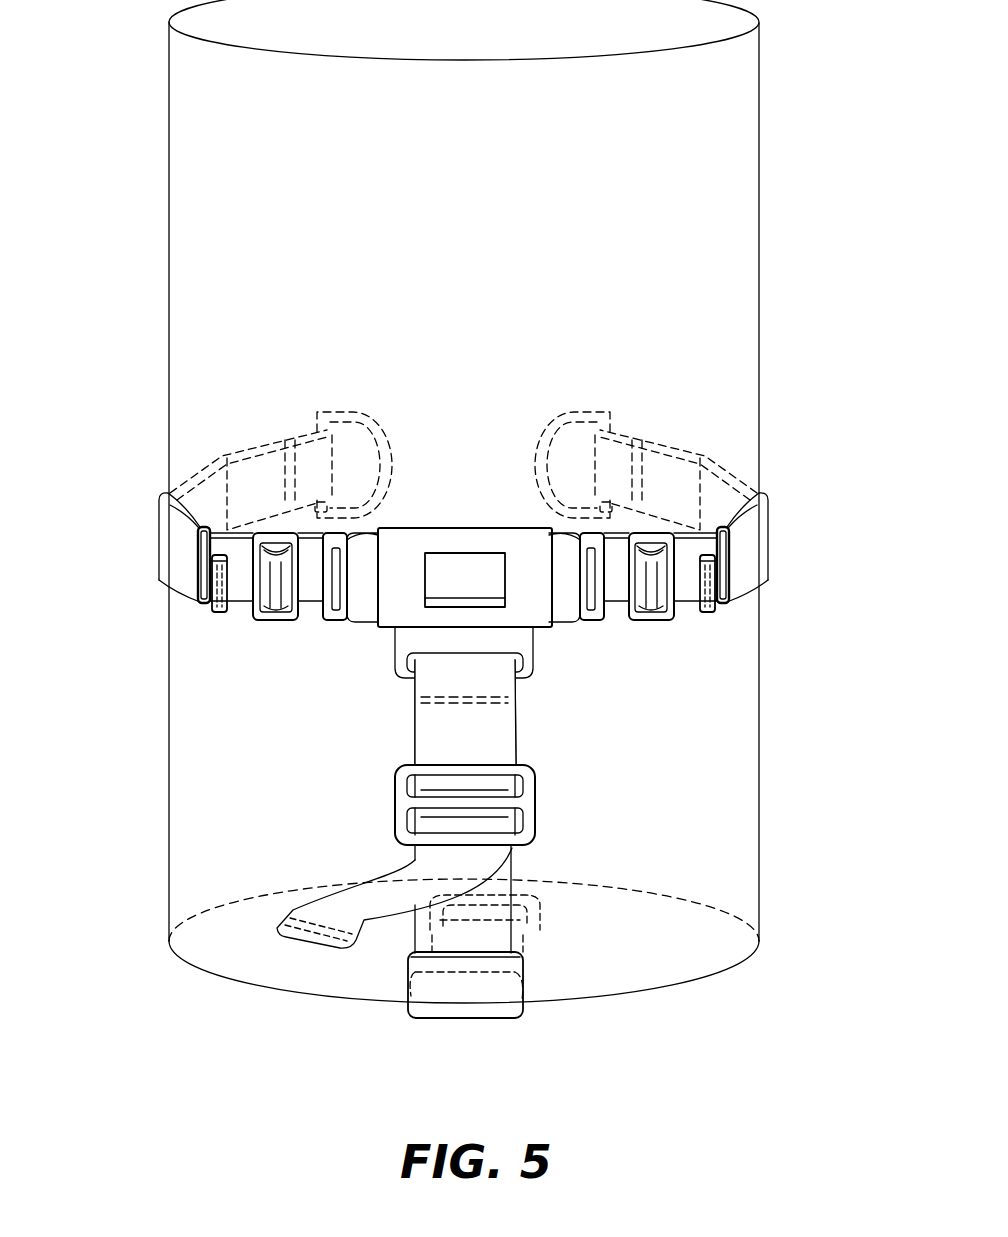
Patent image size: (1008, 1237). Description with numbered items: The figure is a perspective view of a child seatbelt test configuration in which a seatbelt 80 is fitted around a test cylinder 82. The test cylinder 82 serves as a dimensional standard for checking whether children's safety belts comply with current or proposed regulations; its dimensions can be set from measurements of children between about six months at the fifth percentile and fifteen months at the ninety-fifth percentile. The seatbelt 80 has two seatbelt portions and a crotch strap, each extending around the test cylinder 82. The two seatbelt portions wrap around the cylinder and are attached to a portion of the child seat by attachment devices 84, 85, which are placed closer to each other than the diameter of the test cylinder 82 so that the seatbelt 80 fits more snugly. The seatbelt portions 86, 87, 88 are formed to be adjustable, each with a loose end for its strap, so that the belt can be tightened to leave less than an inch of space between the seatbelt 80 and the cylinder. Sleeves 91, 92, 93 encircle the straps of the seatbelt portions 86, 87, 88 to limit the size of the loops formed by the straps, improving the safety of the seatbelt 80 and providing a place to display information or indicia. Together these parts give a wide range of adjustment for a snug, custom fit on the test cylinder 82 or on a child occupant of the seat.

The seatbelt 80 is at (343, 690).
The test cylinder 82 is at (733, 222).
The attachment device 84 is at (372, 415).
The attachment device 85 is at (552, 422).
The seatbelt portion 86 is at (242, 603).
The seatbelt portion 87 is at (693, 603).
The seatbelt portion 88 is at (513, 862).
The sleeve 91 is at (175, 542).
The sleeve 92 is at (758, 542).
The sleeve 93 is at (482, 1007).